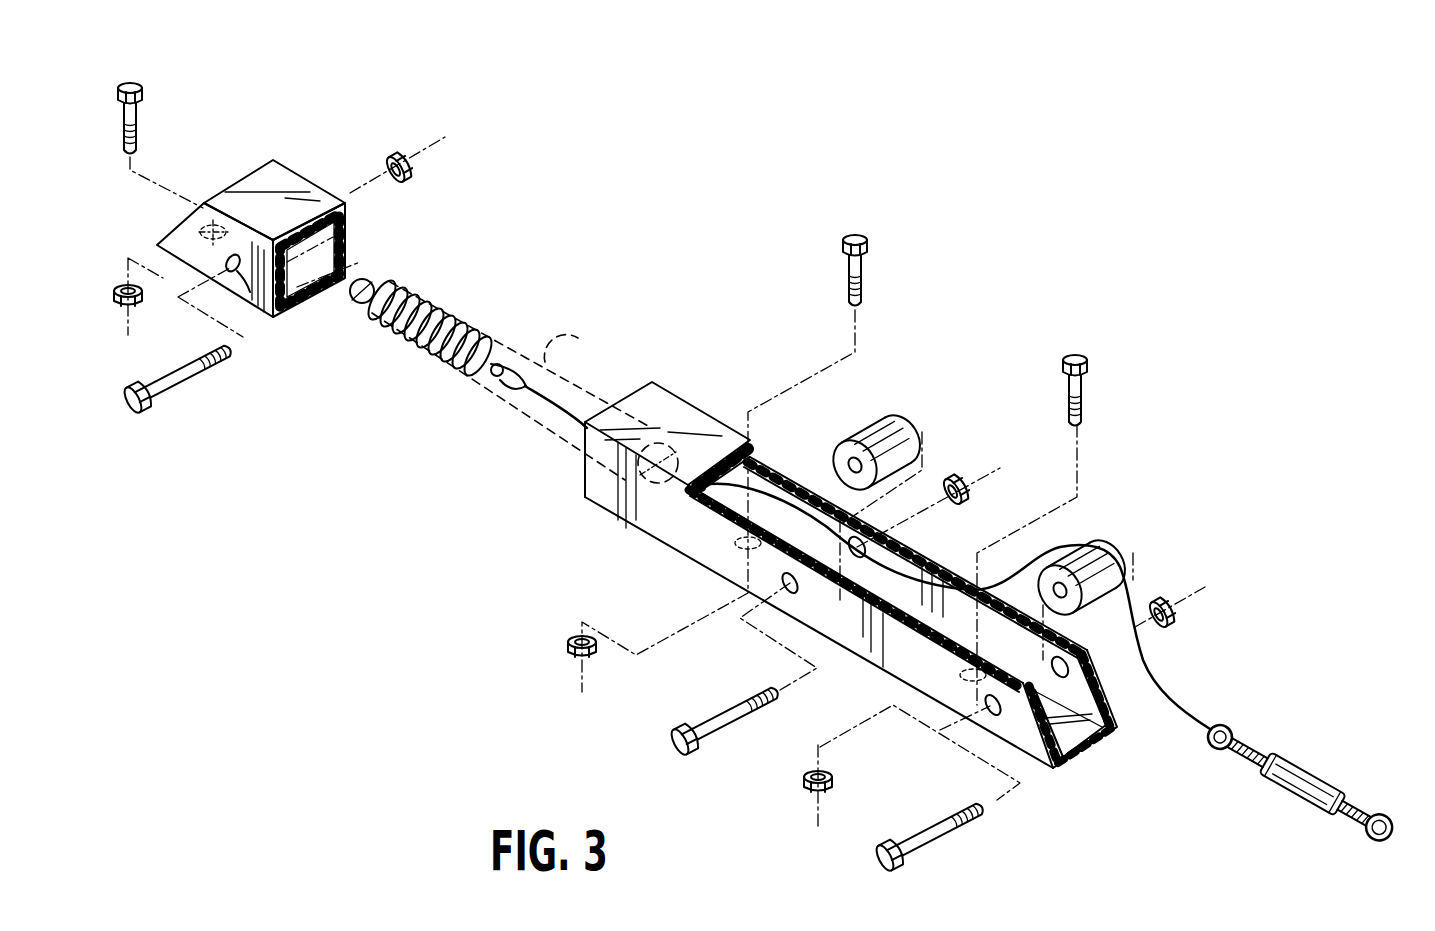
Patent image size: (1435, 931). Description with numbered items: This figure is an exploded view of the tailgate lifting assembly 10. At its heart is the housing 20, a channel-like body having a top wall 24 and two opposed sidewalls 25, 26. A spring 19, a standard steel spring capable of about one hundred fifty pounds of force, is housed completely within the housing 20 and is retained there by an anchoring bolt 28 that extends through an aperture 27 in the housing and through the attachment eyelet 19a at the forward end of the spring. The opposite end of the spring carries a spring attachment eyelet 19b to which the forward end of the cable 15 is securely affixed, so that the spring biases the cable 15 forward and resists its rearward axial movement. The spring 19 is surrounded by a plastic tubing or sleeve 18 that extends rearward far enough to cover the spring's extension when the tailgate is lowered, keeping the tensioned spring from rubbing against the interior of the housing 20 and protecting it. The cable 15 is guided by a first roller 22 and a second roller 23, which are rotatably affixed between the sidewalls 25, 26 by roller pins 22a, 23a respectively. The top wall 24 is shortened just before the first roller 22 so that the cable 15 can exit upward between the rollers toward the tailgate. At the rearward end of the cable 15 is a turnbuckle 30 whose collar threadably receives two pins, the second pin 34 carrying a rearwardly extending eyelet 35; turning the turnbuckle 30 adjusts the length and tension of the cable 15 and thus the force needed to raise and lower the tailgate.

The lifting assembly 10 is at (912, 203).
The cable 15 is at (563, 403).
The plastic tubing or sleeve 18 is at (568, 344).
The spring 19 is at (483, 333).
The attachment eyelet 19a is at (363, 277).
The spring attachment eyelet 19b is at (504, 358).
The housing 20 is at (287, 179).
The first roller 22 is at (897, 420).
The roller pin 22a is at (735, 705).
The second roller 23 is at (1103, 548).
The roller pin 23a is at (930, 835).
The top wall 24 is at (678, 405).
The sidewall 25 is at (768, 462).
The side-wall 26 is at (702, 494).
The aperture 27 is at (251, 297).
The anchoring bolt 28 is at (182, 373).
The turnbuckle 30 is at (1319, 764).
The second pin 34 is at (1357, 808).
The eyelet 35 is at (1386, 815).